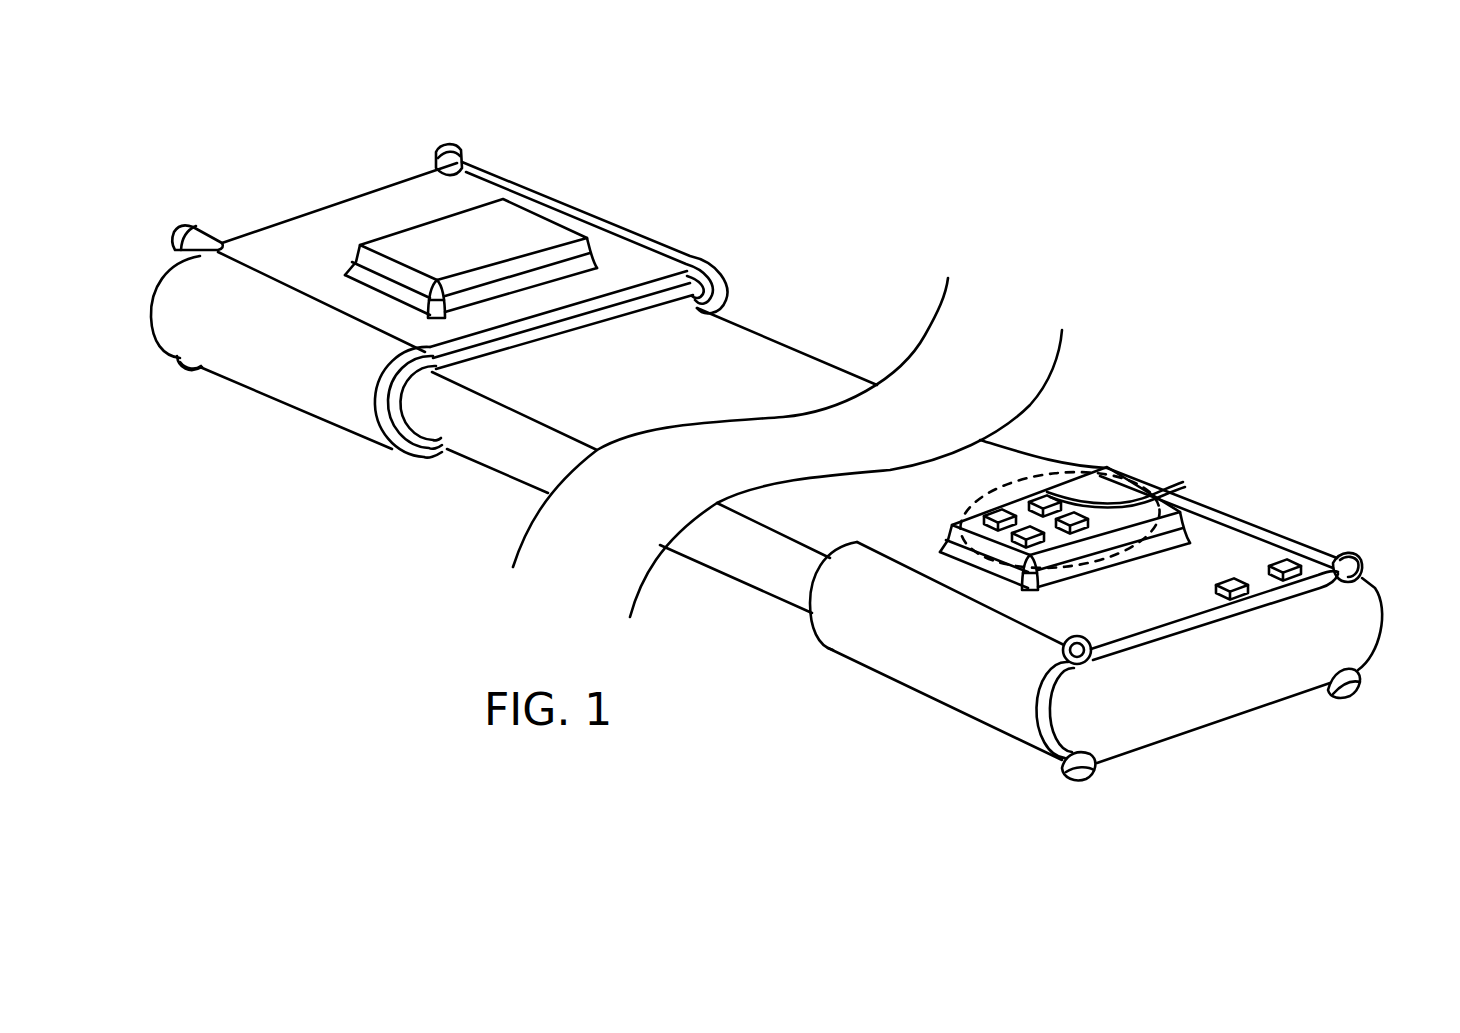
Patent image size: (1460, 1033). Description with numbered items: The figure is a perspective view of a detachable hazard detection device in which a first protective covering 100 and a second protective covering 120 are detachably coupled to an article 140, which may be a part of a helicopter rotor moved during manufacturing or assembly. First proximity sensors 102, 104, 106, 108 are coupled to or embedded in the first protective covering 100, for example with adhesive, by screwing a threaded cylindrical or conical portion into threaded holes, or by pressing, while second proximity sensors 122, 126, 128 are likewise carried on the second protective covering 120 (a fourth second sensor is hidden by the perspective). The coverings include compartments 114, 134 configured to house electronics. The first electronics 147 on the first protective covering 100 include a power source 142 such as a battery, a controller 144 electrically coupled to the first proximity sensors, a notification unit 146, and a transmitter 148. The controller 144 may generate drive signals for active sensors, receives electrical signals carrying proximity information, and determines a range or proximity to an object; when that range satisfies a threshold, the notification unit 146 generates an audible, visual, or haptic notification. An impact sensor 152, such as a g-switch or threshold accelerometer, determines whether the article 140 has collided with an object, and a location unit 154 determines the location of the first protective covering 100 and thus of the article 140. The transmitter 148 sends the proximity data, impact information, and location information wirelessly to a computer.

The first protective covering 100 is at (1285, 500).
The first proximity sensor 102 is at (1115, 763).
The first proximity sensor 104 is at (1370, 690).
The first proximity sensor 106 is at (1370, 557).
The first proximity sensor 108 is at (1045, 646).
The compartment 114 is at (1140, 478).
The second protective covering 120 is at (585, 143).
The second proximity sensor 122 is at (182, 380).
The second proximity sensor 126 is at (430, 144).
The second proximity sensor 128 is at (201, 210).
The compartment 134 is at (586, 236).
The article 140 is at (478, 453).
The power source 142 is at (1000, 541).
The controller 144 is at (1038, 487).
The notification unit 146 is at (1105, 530).
The first electronics 147 is at (1063, 455).
The transmitter 148 is at (987, 506).
The impact sensor 152 is at (1280, 555).
The location unit 154 is at (1227, 577).